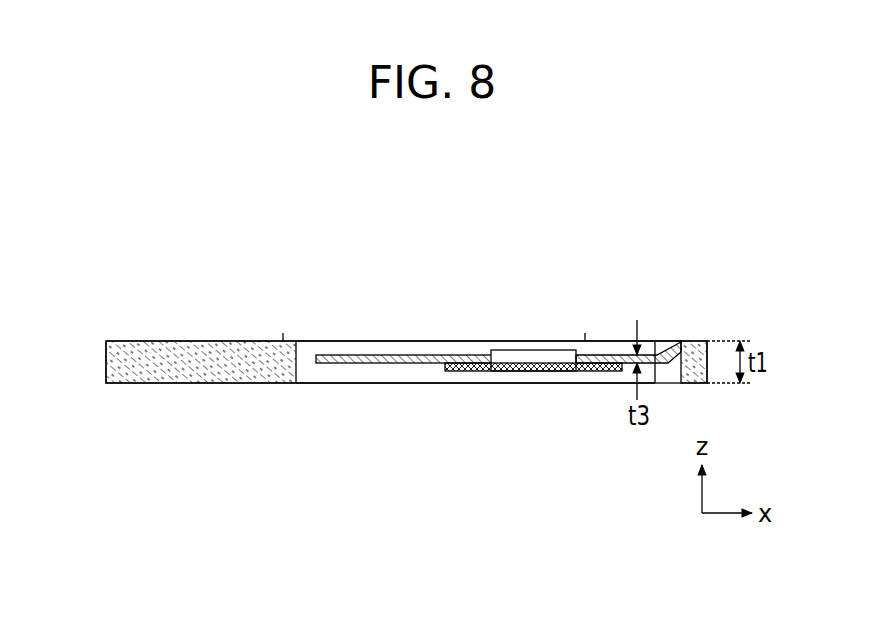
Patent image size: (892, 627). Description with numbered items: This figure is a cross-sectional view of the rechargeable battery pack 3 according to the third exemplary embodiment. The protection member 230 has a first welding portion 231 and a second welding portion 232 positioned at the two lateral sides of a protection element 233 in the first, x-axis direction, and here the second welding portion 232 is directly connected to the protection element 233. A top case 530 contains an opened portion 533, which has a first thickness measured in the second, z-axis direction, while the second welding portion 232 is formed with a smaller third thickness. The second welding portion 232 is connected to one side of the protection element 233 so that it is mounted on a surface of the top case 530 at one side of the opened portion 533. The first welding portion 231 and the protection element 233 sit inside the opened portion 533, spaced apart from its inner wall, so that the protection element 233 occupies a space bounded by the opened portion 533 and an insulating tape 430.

The rechargeable battery pack 3 is at (455, 246).
The protection member 230 is at (710, 325).
The first welding portion 231 is at (362, 362).
The second welding portion 232 is at (665, 353).
The protection element 233 is at (545, 358).
The insulating tape 430 is at (374, 336).
The top case 530 is at (201, 325).
The opened portion 533 is at (505, 372).